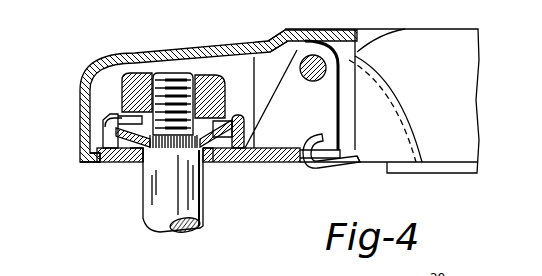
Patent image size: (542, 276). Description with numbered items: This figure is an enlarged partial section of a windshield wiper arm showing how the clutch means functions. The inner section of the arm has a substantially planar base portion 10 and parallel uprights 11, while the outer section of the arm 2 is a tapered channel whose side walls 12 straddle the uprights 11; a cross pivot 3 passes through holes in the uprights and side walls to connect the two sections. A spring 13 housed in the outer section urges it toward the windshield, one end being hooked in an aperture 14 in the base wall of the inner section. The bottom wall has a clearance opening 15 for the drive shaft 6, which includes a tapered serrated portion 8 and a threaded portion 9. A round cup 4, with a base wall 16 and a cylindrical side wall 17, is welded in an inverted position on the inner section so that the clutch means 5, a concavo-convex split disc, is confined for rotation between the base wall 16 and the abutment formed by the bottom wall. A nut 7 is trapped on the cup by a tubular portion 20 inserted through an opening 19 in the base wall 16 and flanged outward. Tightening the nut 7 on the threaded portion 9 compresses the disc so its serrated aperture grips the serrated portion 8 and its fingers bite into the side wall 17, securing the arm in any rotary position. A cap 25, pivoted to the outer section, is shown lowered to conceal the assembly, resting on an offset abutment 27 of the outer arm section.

The outer section of the arm 2 is at (448, 26).
The cross pivot 3 is at (312, 54).
The cup 4 is at (103, 122).
The clutch means 5 is at (130, 162).
The drive shaft 6 is at (209, 221).
The nut 7 is at (115, 85).
The tapered serrated portion 8 is at (173, 153).
The threaded portion 9 is at (182, 74).
The base portion 10 is at (245, 165).
The uprights 11 is at (350, 48).
The side walls 12 is at (403, 38).
The spring 13 is at (343, 168).
The aperture 14 is at (297, 165).
The clearance opening 15 is at (212, 165).
The base wall 16 is at (124, 119).
The side wall 17 is at (103, 147).
The opening 19 is at (232, 116).
The tubular portion 20 is at (137, 112).
The cap 25 is at (118, 53).
The offset abutment 27 is at (233, 53).